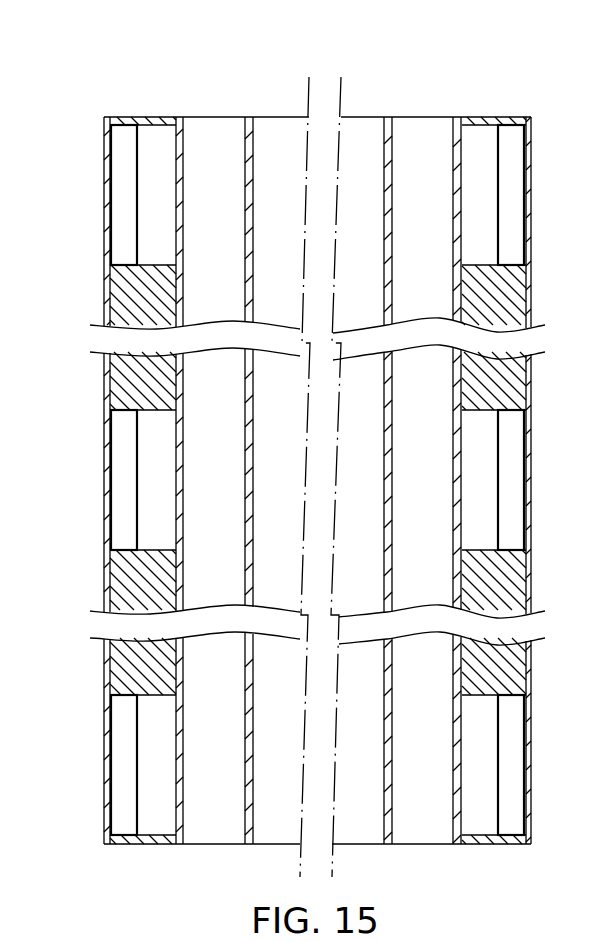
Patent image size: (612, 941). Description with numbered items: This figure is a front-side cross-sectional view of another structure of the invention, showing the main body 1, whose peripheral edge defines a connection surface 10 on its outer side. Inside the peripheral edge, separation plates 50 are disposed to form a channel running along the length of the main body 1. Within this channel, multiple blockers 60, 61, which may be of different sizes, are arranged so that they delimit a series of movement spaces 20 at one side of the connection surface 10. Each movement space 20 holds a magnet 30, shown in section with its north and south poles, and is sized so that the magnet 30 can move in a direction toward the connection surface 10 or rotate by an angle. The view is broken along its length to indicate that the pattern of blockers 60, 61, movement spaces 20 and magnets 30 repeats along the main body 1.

The main body 1 is at (262, 117).
The connection surface 10 is at (105, 148).
The movement space 20 is at (160, 196).
The magnet 30 is at (124, 136).
The separation plate 50 is at (181, 130).
The blocker 60 is at (130, 303).
The blocker 61 is at (143, 116).